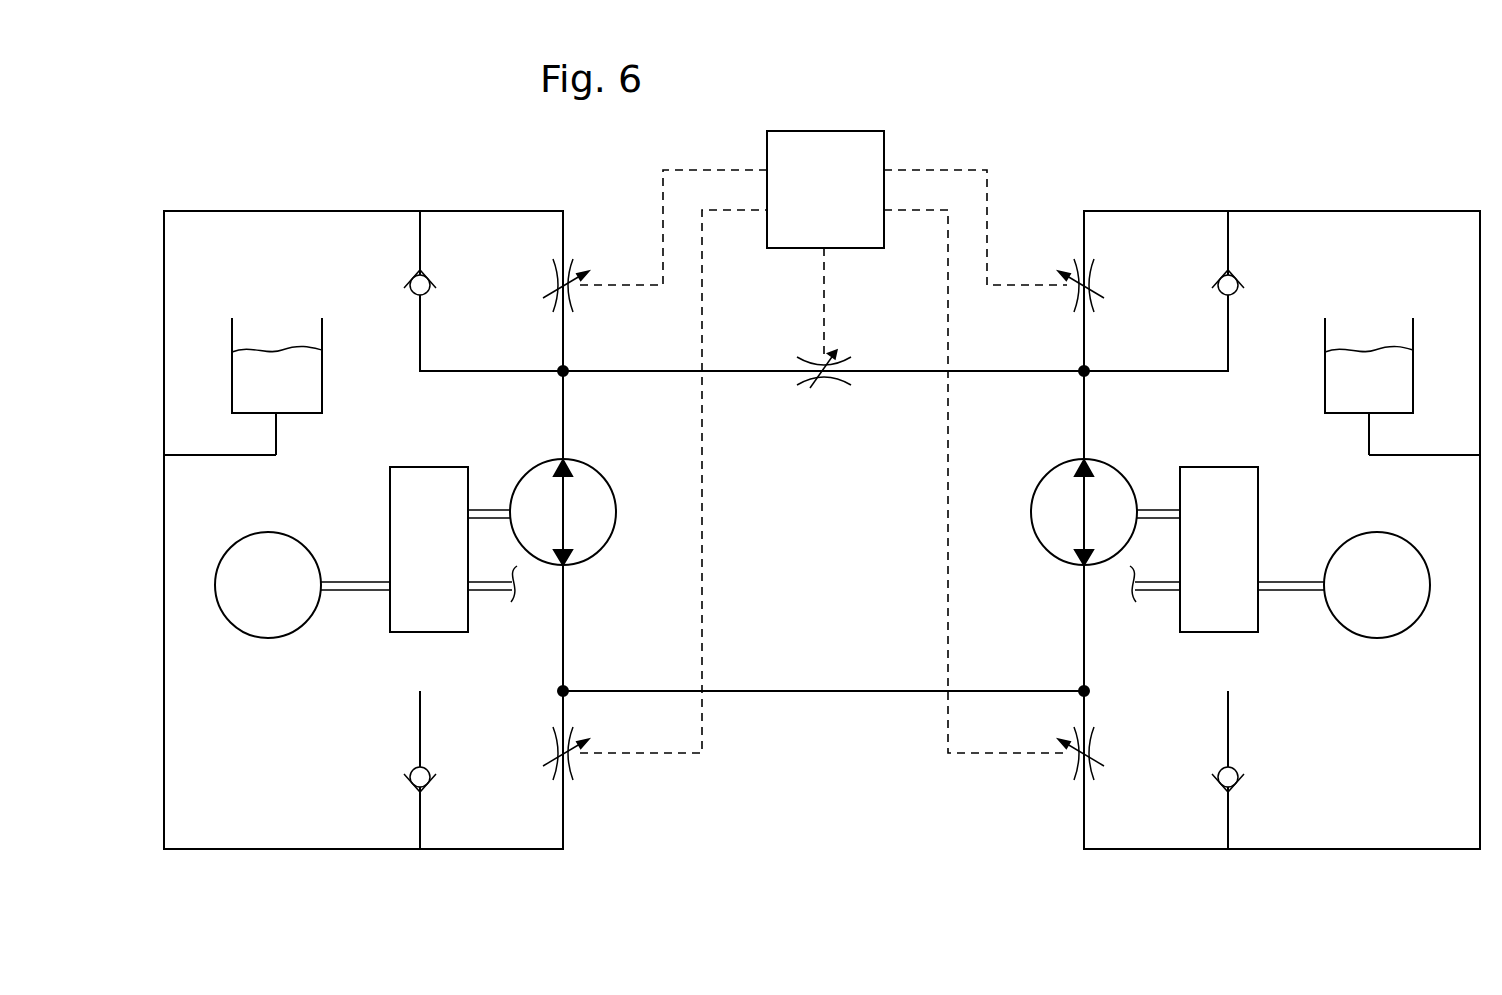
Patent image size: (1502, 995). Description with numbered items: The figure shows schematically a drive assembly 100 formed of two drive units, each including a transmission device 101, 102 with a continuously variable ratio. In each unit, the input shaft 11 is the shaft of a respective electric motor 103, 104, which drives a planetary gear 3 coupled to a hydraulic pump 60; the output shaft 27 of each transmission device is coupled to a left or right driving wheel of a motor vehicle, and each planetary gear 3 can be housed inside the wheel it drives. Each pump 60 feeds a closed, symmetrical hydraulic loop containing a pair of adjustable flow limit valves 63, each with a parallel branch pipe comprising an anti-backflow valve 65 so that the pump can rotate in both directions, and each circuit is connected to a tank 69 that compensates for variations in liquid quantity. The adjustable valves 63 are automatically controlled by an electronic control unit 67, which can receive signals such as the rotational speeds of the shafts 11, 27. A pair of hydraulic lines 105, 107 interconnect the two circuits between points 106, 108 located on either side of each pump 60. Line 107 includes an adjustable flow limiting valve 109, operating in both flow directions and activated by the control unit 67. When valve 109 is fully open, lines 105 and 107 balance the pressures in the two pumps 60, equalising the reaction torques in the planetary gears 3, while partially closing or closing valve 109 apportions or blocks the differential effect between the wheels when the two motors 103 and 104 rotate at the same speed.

The drive assembly 100 is at (1008, 118).
The transmission device 101 is at (348, 168).
The transmission device 102 is at (1298, 168).
The electronic control unit 67 is at (826, 148).
The anti-backflow valve 65 is at (408, 282).
The adjustable flow limit valve 63 is at (555, 283).
The tank 69 is at (283, 362).
The hydraulic pump 60 is at (606, 490).
The planetary gear 3 is at (405, 510).
The electric motor 103 is at (254, 545).
The electric motor 104 is at (1391, 545).
The input shaft 11 is at (345, 591).
The output shaft 27 is at (490, 591).
The point 108 is at (568, 368).
The point 106 is at (567, 688).
The hydraulic line 107 is at (747, 373).
The adjustable flow limiting valve 109 is at (828, 378).
The hydraulic line 105 is at (822, 692).